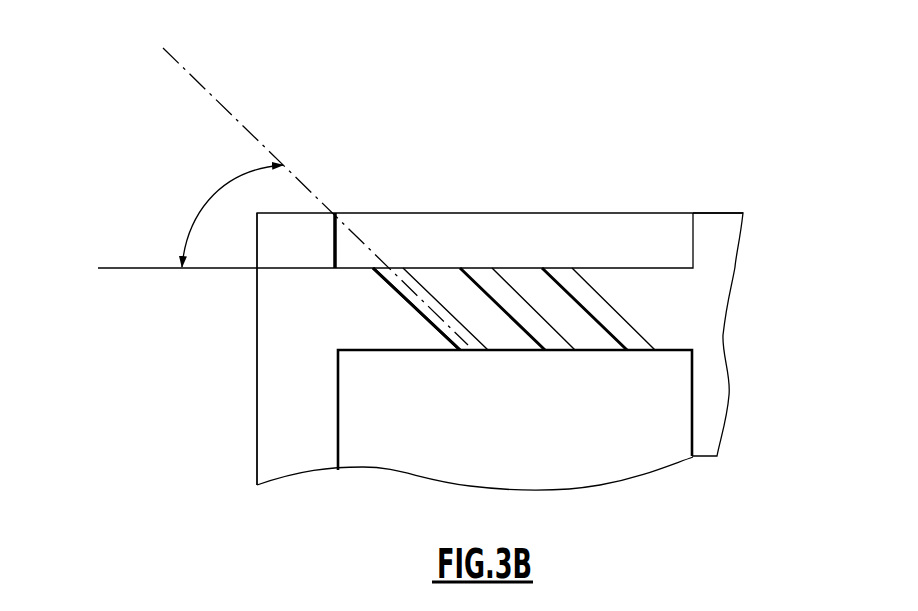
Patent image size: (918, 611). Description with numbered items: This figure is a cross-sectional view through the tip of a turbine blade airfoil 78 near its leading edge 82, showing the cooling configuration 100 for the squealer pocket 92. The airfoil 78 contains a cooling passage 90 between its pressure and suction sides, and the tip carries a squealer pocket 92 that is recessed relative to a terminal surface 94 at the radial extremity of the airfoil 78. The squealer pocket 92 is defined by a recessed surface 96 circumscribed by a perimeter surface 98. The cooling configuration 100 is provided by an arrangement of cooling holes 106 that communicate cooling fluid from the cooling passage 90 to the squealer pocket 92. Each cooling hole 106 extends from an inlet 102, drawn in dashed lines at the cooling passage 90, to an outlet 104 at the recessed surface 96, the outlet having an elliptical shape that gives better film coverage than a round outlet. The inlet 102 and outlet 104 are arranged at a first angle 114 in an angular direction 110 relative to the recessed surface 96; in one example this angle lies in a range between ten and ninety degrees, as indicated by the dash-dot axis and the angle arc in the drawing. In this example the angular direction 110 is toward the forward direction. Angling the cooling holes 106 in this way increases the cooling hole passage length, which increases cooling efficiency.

The airfoil 78 is at (632, 180).
The leading edge 82 is at (257, 303).
The cooling passage 90 is at (516, 443).
The squealer pocket 92 is at (462, 226).
The terminal surface 94 is at (713, 213).
The recessed surface 96 is at (357, 265).
The perimeter surface 98 is at (573, 238).
The cooling configuration 100 is at (678, 300).
The inlet 102 is at (467, 350).
The outlet 104 is at (397, 268).
The cooling holes 106 is at (404, 297).
The angular direction 110 is at (221, 105).
The first angle 114 is at (197, 214).